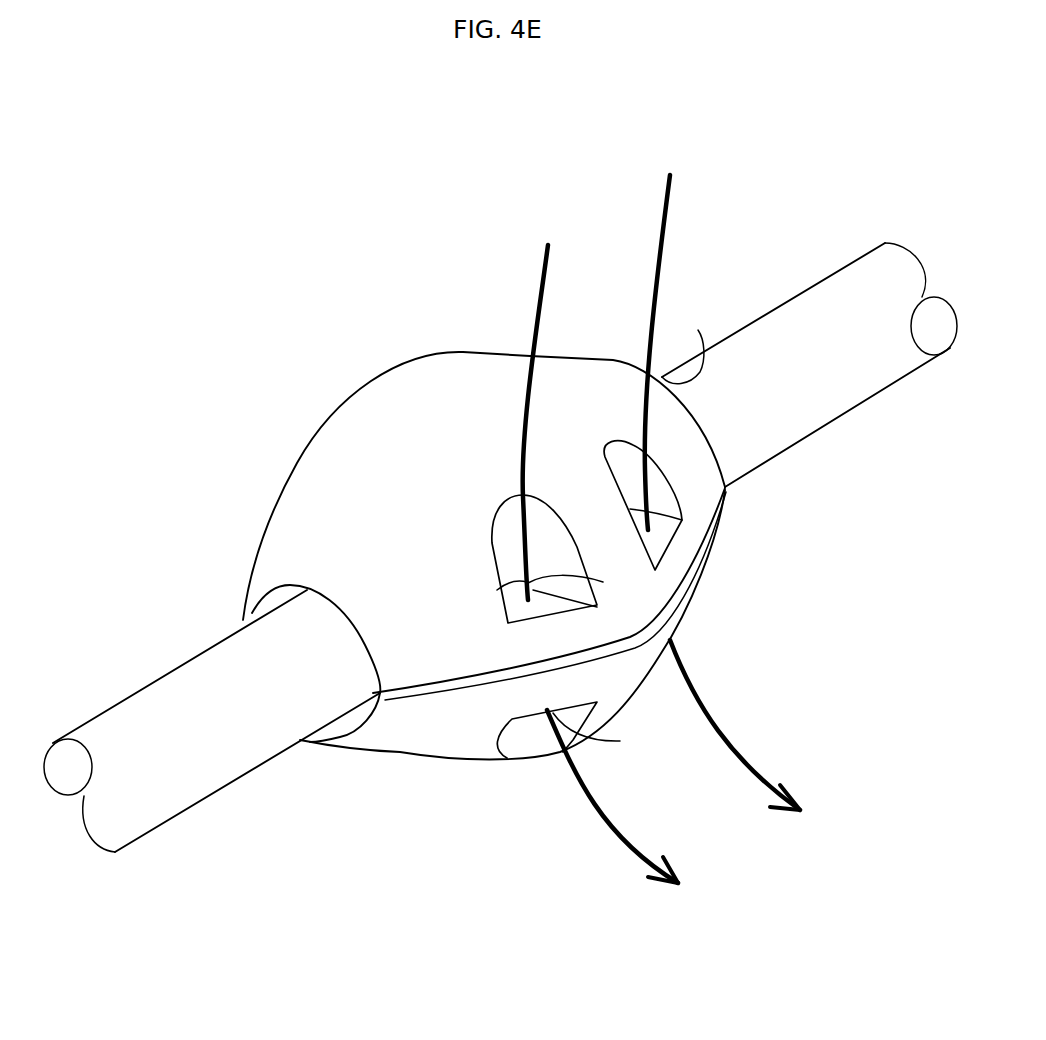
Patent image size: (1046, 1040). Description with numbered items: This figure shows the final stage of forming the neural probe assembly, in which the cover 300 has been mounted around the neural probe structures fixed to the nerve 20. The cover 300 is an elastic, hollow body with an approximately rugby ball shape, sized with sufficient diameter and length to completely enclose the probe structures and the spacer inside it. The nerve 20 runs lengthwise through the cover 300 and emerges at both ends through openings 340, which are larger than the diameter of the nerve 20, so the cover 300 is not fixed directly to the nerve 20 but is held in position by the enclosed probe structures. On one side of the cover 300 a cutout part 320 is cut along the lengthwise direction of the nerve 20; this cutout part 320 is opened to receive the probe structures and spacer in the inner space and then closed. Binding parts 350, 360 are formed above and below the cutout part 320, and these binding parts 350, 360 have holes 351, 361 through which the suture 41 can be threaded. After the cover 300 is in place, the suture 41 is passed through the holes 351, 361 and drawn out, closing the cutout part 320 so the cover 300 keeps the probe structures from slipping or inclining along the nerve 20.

The nerve 20 is at (820, 310).
The suture 41 is at (545, 288).
The cover 300 is at (395, 397).
The cutout part 320 is at (437, 693).
The openings 340 is at (270, 600).
The binding part 350 is at (558, 557).
The hole 351 is at (603, 582).
The binding part 360 is at (525, 752).
The hole 361 is at (620, 741).